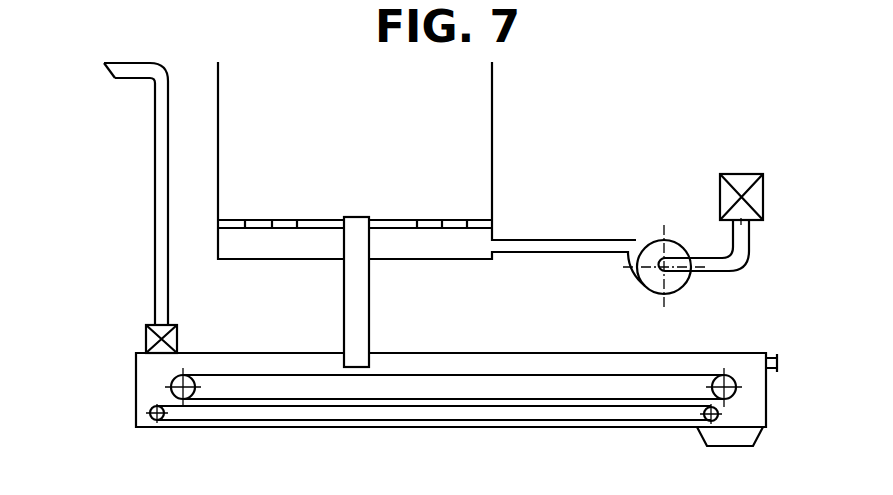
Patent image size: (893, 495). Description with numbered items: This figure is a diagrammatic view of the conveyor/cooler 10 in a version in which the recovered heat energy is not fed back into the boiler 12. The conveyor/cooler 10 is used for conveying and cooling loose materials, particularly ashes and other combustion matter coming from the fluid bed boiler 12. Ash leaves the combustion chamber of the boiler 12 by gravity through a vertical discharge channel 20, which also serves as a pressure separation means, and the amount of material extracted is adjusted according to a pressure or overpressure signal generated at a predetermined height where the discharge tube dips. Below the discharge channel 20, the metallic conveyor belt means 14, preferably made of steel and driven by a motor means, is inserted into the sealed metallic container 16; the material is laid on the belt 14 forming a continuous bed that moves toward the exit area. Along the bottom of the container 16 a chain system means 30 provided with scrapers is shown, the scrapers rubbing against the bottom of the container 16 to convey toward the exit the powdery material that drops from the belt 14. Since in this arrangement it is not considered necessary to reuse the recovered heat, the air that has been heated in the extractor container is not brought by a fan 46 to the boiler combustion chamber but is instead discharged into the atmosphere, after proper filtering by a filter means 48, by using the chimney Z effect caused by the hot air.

The conveyor/cooler 10 is at (656, 143).
The boiler 12 is at (493, 212).
The metallic conveyor belt means 14 is at (172, 376).
The sealed metallic container 16 is at (520, 353).
The vertical discharge channel 20 is at (369, 302).
The chain system means 30 is at (212, 416).
The fan 46 is at (684, 288).
The filter means 48 is at (146, 344).
The chimney Z is at (155, 224).